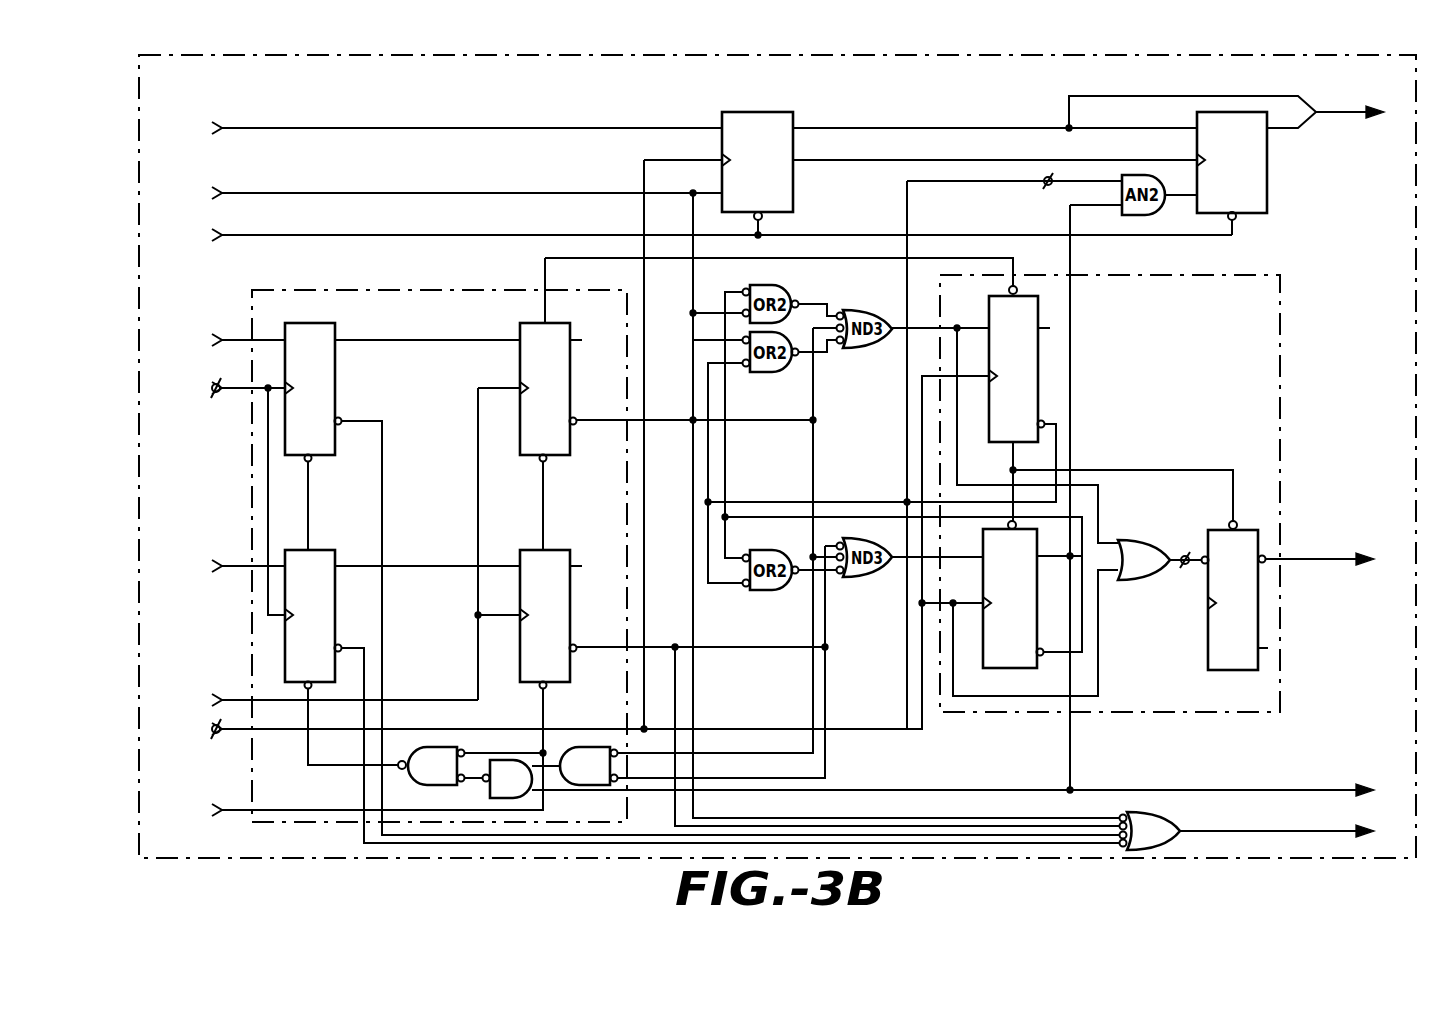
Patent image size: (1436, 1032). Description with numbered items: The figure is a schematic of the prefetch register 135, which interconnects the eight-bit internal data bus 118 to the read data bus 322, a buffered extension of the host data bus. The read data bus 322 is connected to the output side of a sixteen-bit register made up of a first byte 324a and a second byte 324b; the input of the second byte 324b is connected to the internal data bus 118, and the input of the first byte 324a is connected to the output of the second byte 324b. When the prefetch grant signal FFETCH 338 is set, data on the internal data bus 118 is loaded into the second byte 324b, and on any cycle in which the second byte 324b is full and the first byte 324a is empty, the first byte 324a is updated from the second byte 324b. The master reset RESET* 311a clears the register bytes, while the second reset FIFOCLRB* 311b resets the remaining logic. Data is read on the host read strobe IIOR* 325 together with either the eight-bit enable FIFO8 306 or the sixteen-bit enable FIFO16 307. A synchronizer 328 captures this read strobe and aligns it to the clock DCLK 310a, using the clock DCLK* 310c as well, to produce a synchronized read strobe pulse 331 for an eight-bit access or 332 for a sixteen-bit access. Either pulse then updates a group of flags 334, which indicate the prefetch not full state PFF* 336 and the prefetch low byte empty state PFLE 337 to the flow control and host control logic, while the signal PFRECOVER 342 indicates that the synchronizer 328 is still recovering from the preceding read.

The prefetch register 135 is at (777, 456).
The internal data bus 118 is at (452, 123).
The prefetch grant signal FFETCH 338 is at (451, 188).
The master reset RESET* 311a is at (701, 229).
The 16-bit FIFO enable FIFO16 307 is at (219, 335).
The read strobe IIOR* 325 is at (219, 378).
The 8-bit FIFO enable FIFO8 306 is at (219, 561).
The clock signal DCLK 310a is at (310, 696).
The clock signal DCLK* 310c is at (566, 559).
The reset FIFOCLRB* 311b is at (344, 756).
The second byte of register 324b is at (797, 173).
The first byte of register 324a is at (1267, 173).
The read data bus 322 is at (1105, 103).
The synchronizer 328 is at (685, 566).
The synchronized read strobe pulse (16-bit access) 332 is at (696, 408).
The synchronized read strobe pulse (8-bit access) 331 is at (848, 723).
The group of flags 334 is at (1110, 495).
The prefetch not full flag PFF* 336 is at (1334, 553).
The prefetch low byte empty flag PFLE 337 is at (967, 787).
The signal PFRECOVER 342 is at (1262, 829).